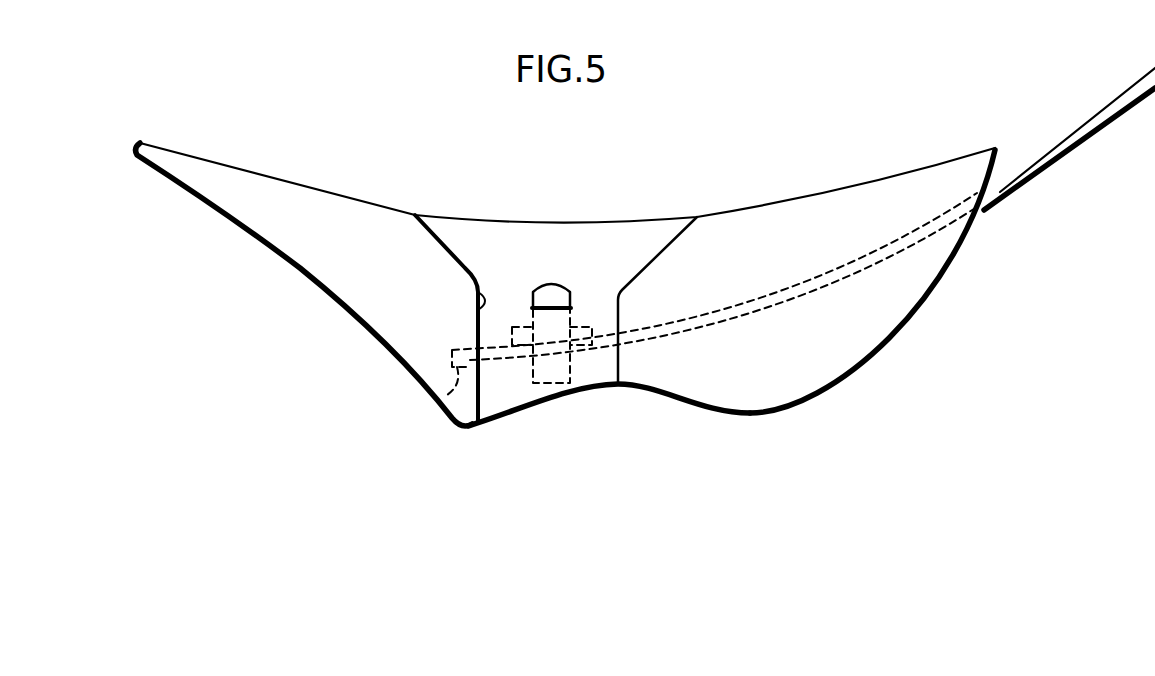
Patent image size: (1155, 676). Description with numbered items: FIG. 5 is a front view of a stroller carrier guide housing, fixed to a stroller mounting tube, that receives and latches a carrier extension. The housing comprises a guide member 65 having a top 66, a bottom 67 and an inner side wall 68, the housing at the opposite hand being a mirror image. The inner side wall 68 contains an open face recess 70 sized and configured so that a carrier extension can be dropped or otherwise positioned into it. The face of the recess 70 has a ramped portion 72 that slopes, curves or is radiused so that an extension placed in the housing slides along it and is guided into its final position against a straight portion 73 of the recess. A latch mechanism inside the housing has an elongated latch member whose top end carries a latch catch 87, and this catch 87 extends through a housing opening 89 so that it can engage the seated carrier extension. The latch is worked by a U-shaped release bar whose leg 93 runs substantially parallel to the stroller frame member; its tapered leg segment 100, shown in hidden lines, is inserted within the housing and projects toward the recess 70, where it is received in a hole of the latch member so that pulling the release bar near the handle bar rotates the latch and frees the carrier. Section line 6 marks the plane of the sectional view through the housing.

The section line 6- 6 is at (510, 118).
The guide member 65 is at (330, 233).
The top 66 is at (375, 205).
The bottom 67 is at (690, 405).
The inner side wall 68 is at (868, 308).
The open face recess 70 is at (655, 247).
The ramped portion 72 is at (630, 283).
The straight portion 73 is at (478, 293).
The latch catch 87 is at (543, 297).
The housing opening 89 is at (568, 283).
The leg 93 is at (1038, 158).
The leg segment 100 is at (430, 397).